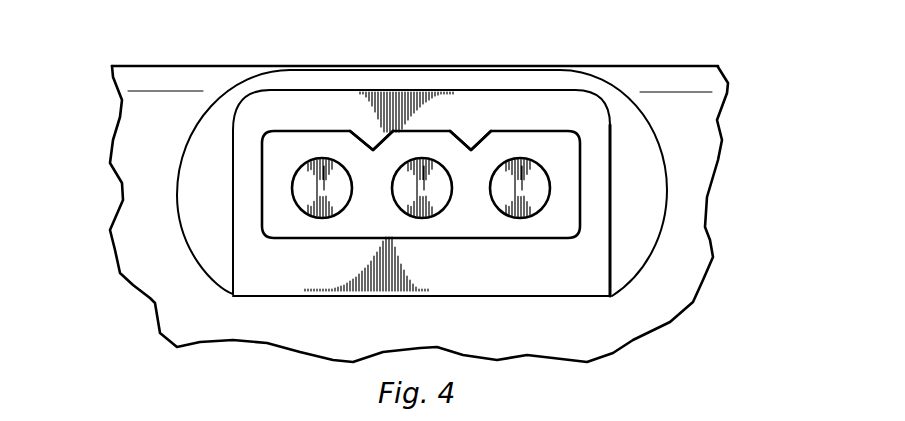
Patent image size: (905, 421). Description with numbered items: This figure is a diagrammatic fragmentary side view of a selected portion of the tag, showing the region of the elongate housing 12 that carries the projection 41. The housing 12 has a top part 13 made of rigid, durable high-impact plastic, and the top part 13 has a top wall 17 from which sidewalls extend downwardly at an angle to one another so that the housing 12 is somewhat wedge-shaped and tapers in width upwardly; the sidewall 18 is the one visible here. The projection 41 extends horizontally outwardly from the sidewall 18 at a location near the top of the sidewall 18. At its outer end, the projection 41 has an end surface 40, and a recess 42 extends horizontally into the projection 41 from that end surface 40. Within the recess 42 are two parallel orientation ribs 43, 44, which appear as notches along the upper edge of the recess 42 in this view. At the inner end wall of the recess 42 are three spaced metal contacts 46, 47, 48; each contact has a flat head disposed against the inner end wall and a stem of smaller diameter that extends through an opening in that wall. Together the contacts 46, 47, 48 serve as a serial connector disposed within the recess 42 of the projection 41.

The housing 12 is at (235, 65).
The top part 13 is at (148, 76).
The top wall 17 is at (646, 66).
The sidewall 18 is at (435, 331).
The end surface 40 is at (243, 157).
The projection 41 is at (426, 80).
The recess 42 is at (553, 133).
The orientation rib 43 is at (373, 155).
The orientation rib 44 is at (471, 155).
The metal contact 46 is at (303, 196).
The metal contact 47 is at (440, 196).
The metal contact 48 is at (540, 196).